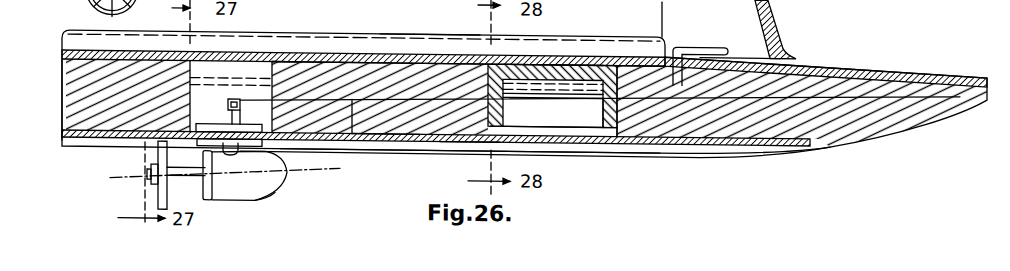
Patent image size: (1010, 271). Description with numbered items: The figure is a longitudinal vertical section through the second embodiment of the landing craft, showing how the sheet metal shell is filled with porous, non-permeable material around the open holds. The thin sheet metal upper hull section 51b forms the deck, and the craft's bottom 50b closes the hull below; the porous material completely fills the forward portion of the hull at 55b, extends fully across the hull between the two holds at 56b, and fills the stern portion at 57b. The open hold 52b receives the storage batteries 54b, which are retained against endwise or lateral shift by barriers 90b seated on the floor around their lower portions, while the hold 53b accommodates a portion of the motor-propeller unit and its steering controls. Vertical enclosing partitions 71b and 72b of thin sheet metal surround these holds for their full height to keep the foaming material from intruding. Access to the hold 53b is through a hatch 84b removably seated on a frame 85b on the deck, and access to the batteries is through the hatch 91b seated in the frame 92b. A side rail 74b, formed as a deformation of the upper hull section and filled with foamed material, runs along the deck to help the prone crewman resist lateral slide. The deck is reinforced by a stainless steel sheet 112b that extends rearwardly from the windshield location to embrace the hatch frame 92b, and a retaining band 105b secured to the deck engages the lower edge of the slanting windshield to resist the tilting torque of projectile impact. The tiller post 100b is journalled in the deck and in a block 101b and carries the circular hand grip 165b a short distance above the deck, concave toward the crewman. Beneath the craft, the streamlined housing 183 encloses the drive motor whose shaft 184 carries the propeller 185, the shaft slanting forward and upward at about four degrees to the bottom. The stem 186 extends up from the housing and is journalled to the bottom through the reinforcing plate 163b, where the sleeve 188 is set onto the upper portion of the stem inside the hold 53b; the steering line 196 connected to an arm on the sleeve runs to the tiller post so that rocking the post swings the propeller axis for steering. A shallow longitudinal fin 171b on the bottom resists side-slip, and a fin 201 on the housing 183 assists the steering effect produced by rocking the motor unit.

The craft's bottom 50b is at (803, 143).
The upper hull section 51b is at (852, 50).
The hold 52b is at (583, 79).
The hold 53b is at (232, 74).
The storage batteries 54b is at (586, 112).
The porous material filling forward portion 55b is at (782, 140).
The porous material between holds 56b is at (372, 60).
The porous material filling stern portion 57b is at (63, 115).
The vertical enclosing partition 71b is at (272, 68).
The vertical enclosing partition 72b is at (468, 133).
The side rail 74b is at (434, 31).
The hatch 84b is at (210, 54).
The frame 85b is at (292, 57).
The barriers 90b is at (565, 127).
The hatch 91b is at (561, 52).
The frame 92b is at (638, 51).
The tiller post 100b is at (655, 140).
The block 101b is at (688, 126).
The retaining band 105b is at (790, 46).
The reinforcing sheet 112b is at (750, 50).
The reinforcing plate 163b is at (383, 134).
The circular hand grip 165b is at (713, 38).
The fin 171b is at (590, 144).
The streamlined housing 183 is at (225, 176).
The shaft 184 is at (168, 176).
The propeller 185 is at (162, 156).
The stem 186 is at (248, 150).
The sleeve 188 is at (228, 113).
The steering line 196 is at (518, 90).
The fin 201 is at (247, 198).